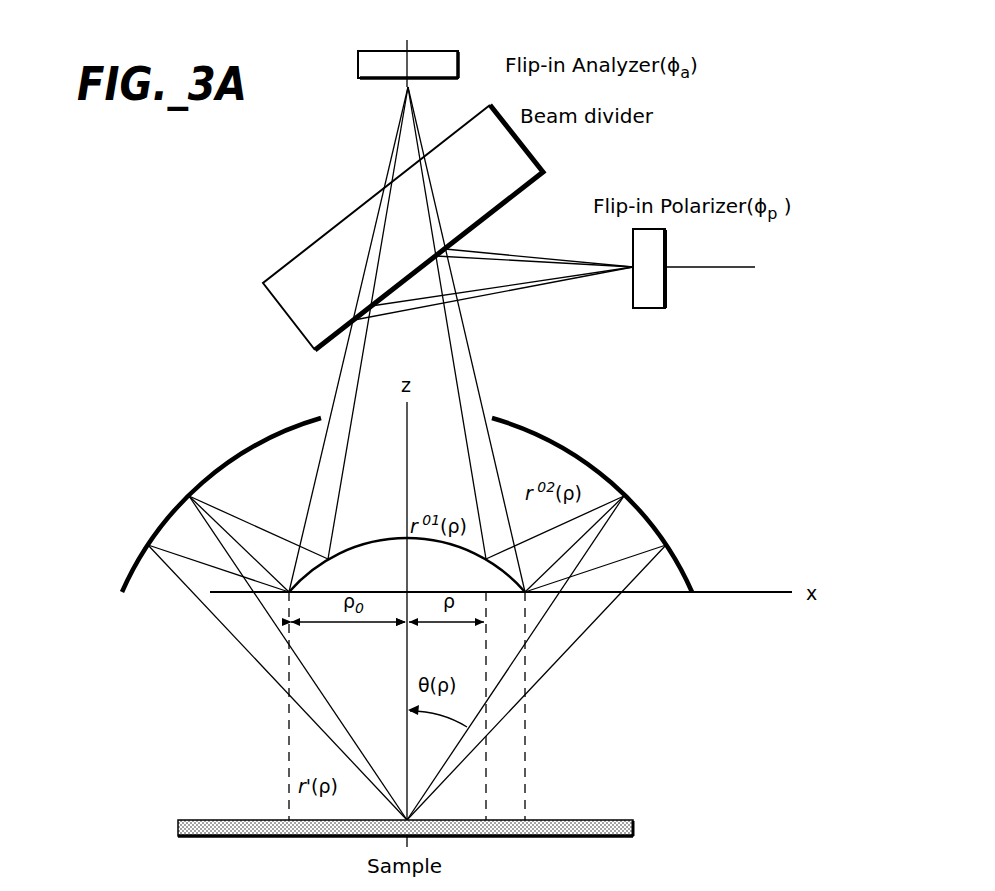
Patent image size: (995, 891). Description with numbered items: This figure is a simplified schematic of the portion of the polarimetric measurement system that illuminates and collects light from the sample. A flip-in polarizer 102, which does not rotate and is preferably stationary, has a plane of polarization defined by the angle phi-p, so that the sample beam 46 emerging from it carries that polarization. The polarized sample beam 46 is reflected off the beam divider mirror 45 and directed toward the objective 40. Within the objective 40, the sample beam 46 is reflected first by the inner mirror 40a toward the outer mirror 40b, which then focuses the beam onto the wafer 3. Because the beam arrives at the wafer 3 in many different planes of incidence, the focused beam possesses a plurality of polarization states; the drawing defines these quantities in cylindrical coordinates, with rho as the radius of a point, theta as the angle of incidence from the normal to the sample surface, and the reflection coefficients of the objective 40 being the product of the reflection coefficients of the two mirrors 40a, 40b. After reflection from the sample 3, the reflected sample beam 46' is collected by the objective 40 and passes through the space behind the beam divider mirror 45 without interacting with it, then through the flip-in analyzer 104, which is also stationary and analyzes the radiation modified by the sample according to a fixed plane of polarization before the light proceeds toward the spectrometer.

The analyzer 104 is at (383, 50).
The beam divider mirror 45 is at (317, 242).
The polarizer 102 is at (650, 308).
The sample beam 46 is at (520, 339).
The reflected sample beam 46' is at (461, 339).
The objective 40 is at (424, 505).
The mirror 40a is at (333, 557).
The mirror 40b is at (563, 442).
The wafer 3 is at (578, 820).